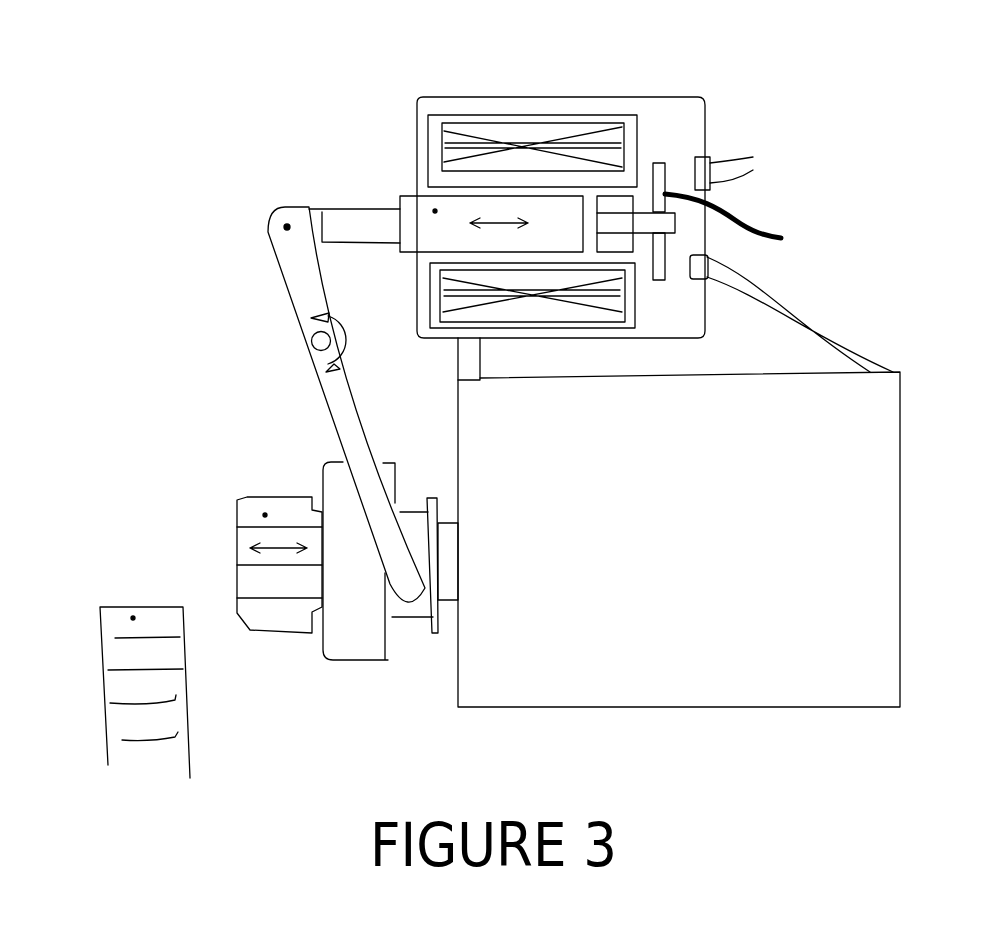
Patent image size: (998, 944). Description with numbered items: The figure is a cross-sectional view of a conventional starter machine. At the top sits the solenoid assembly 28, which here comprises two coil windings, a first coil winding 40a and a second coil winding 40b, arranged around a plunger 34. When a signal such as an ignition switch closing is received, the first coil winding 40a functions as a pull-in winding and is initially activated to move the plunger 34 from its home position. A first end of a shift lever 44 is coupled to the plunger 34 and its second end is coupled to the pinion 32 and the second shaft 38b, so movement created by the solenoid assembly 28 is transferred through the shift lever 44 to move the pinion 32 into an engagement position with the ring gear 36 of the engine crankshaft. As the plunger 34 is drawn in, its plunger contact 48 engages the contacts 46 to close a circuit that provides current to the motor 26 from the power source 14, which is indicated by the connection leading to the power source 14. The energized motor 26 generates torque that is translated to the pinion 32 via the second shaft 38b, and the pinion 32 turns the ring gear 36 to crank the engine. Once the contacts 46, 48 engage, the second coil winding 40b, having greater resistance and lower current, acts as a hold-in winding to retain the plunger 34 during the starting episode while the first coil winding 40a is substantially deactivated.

The power source 14 is at (783, 149).
The motor 26 is at (887, 440).
The solenoid assembly 28 is at (658, 92).
The pinion 32 is at (265, 515).
The plunger 34 is at (435, 211).
The ring gear 36 is at (133, 618).
The second shaft 38b is at (447, 602).
The first coil winding 40a is at (450, 120).
The second coil winding 40b is at (452, 160).
The shift lever 44 is at (300, 296).
The contacts 46 is at (703, 163).
The plunger contact 48 is at (752, 223).